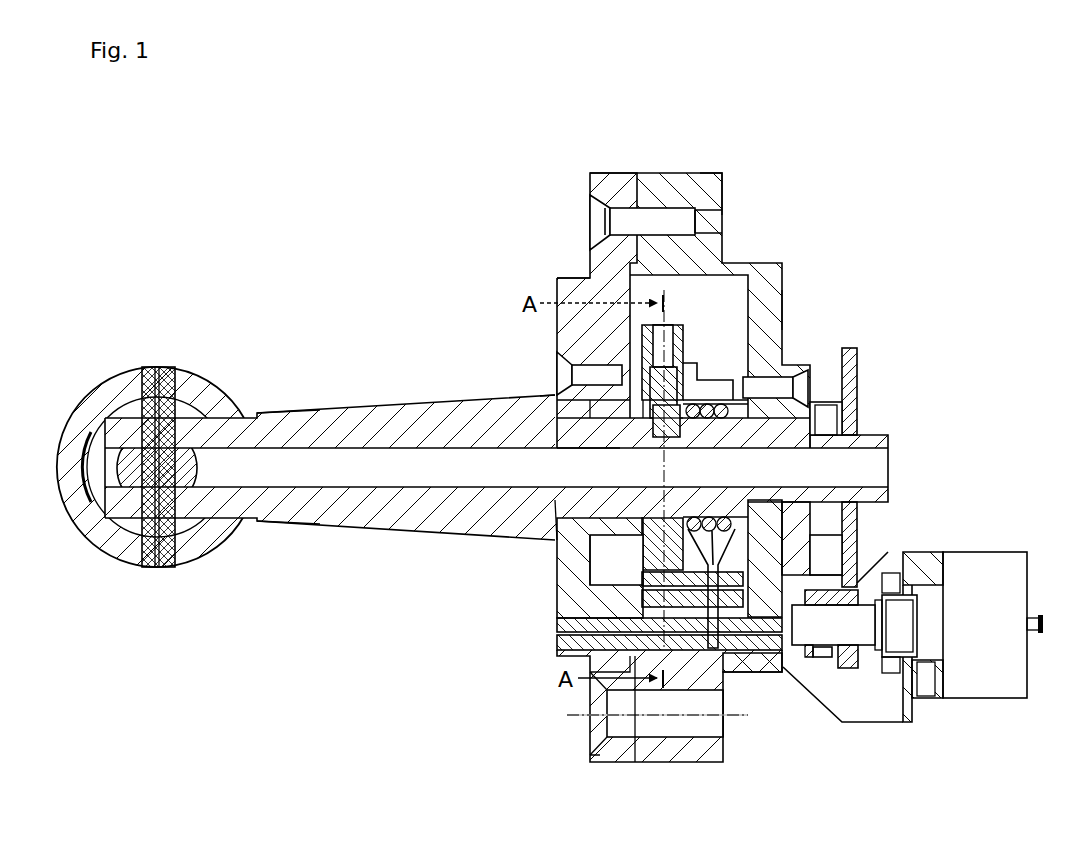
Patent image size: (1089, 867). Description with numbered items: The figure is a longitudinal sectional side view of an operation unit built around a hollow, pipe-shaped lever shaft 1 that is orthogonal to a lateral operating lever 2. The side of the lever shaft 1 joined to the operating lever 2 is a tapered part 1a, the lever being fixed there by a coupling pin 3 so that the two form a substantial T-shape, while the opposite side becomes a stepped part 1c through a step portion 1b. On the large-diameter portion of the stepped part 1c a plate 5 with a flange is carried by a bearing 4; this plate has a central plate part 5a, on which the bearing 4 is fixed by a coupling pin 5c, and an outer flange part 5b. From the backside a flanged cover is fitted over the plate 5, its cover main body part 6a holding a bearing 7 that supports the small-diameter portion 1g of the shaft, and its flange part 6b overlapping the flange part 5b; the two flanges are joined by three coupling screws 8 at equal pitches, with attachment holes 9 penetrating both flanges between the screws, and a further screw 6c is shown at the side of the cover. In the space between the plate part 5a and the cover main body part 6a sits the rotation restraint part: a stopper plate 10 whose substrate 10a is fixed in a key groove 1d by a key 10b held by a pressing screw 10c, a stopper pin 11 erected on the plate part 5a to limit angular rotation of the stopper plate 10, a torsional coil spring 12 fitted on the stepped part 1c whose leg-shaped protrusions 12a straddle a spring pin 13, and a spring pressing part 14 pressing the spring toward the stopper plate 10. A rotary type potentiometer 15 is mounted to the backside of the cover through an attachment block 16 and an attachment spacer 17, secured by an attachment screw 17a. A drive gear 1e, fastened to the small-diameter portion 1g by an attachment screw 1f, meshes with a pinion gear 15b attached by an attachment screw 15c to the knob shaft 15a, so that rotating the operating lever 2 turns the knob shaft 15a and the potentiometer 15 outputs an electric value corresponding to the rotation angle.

The lever shaft 1 is at (357, 407).
The tapered part 1a is at (278, 428).
The step portion 1b is at (640, 428).
The stepped part 1c is at (647, 540).
The key groove 1d is at (560, 428).
The drive gear 1e is at (858, 360).
The attachment screw 1f is at (832, 414).
The small-diameter portion 1g is at (893, 446).
The operating lever 2 is at (118, 378).
The coupling pin 3 is at (162, 368).
The bearing 4 is at (557, 560).
The plate with a flange 5 is at (575, 275).
The plate part 5a is at (567, 278).
The flange part 5b is at (592, 190).
The coupling pin 5c is at (560, 362).
The cover main body part 6a is at (784, 300).
The flange part 6b is at (724, 195).
The cover screw 6c is at (795, 385).
The bearing 7 is at (818, 427).
The coupling screws 8 is at (655, 210).
The attachment holes 9 is at (620, 740).
The stopper plate 10 is at (637, 565).
The substrate 10a is at (653, 518).
The key 10b is at (677, 415).
The pressing screw 10c is at (668, 410).
The stopper pin 11 is at (700, 745).
The torsional coil spring 12 is at (695, 405).
The leg-shaped protrusions 12a is at (716, 610).
The spring pin 13 is at (748, 625).
The spring pressing part 14 is at (740, 380).
The rotary type potentiometer 15 is at (1012, 600).
The knob shaft 15a is at (803, 625).
The pinion gear 15b is at (848, 660).
The attachment screw 15c is at (822, 655).
The attachment block 16 is at (907, 725).
The attachment spacer 17 is at (922, 565).
The attachment screw 17a is at (925, 690).